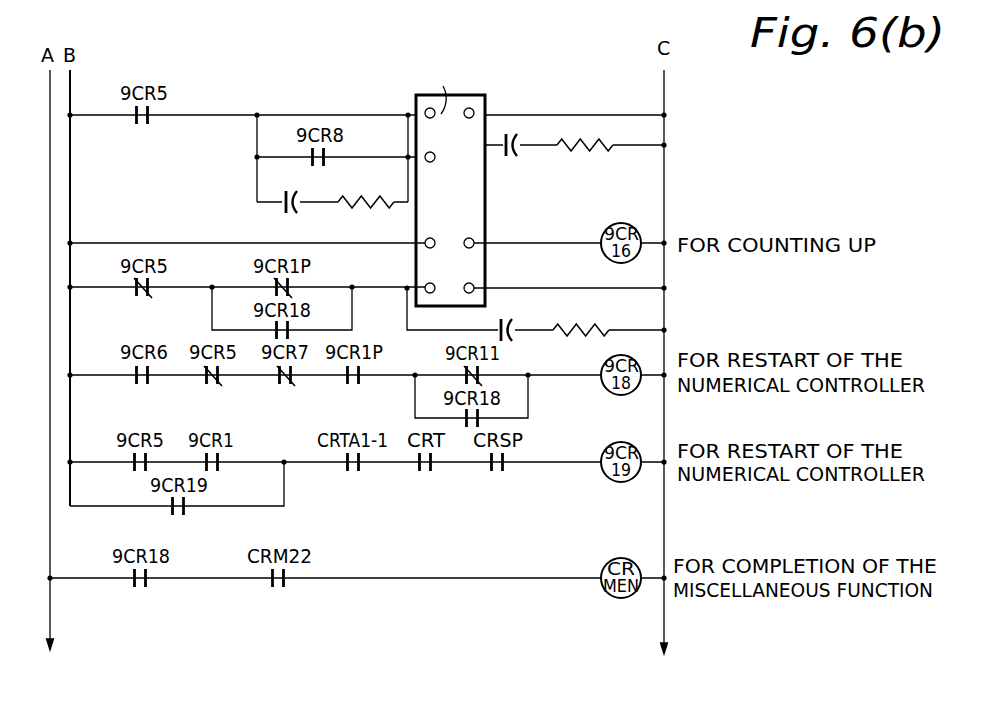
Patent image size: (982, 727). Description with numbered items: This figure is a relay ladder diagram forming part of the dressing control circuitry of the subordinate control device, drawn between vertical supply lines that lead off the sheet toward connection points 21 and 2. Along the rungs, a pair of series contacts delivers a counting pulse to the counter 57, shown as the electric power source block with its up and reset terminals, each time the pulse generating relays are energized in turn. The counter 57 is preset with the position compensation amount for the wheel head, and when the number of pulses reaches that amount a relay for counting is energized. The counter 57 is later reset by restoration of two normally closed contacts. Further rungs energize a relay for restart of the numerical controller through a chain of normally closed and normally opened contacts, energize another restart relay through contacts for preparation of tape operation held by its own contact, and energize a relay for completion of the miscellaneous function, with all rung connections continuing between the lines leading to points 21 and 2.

The counter 57 is at (486, 198).
The line A to circuit 21 is at (50, 373).
The line C to circuit 2 is at (663, 375).